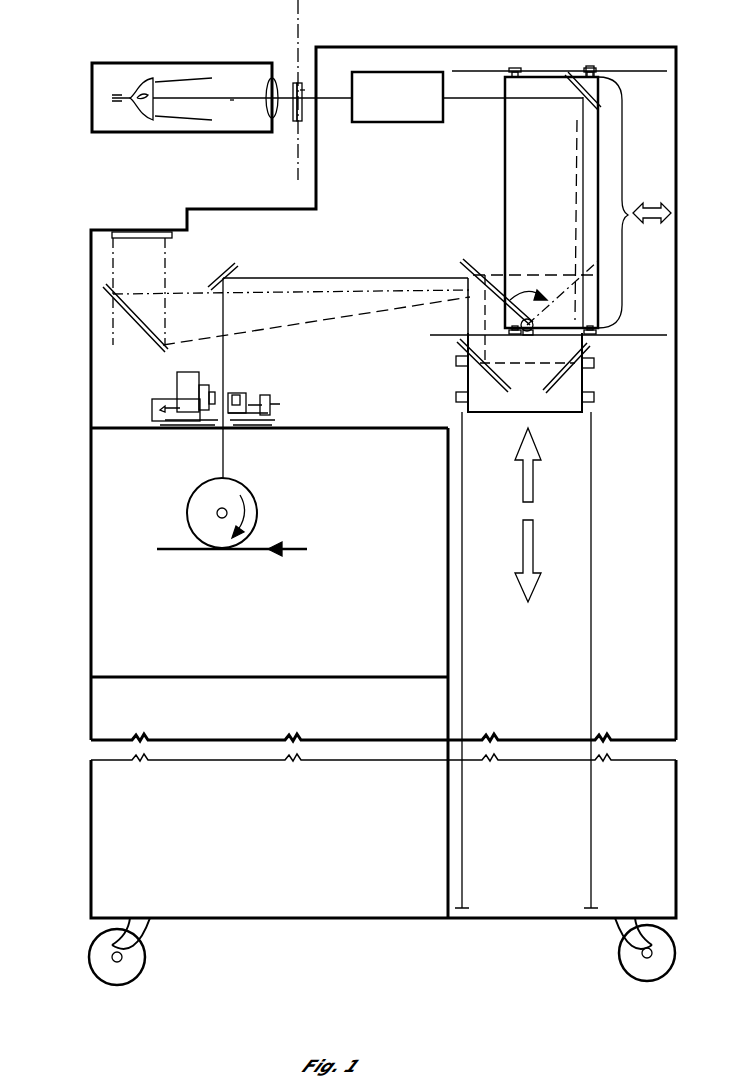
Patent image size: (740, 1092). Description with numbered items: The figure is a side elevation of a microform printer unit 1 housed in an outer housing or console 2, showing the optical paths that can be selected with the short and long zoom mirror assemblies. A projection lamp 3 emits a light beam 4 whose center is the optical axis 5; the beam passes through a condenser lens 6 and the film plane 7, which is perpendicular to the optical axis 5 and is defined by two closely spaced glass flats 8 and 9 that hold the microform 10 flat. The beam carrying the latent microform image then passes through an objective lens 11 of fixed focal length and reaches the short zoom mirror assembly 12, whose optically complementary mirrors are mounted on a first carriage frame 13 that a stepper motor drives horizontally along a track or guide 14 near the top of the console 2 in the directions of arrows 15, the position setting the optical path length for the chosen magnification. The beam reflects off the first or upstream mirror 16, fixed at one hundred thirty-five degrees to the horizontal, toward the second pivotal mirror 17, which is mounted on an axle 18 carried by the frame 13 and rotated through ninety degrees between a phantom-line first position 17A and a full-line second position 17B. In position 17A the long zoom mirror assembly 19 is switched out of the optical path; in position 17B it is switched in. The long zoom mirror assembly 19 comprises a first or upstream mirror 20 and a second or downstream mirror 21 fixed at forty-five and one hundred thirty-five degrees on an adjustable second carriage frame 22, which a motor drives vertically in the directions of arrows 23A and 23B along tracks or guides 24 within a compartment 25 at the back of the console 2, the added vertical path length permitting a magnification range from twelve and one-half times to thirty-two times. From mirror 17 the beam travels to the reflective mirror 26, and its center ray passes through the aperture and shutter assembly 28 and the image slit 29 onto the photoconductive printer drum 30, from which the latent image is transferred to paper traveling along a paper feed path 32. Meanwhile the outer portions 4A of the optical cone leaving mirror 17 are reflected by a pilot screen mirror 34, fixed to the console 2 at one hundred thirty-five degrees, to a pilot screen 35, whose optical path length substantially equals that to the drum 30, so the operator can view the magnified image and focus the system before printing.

The microform printer unit 1 is at (78, 250).
The outer housing or console 2 is at (676, 543).
The projection lamp 3 is at (145, 78).
The light beam 4 is at (178, 110).
The outer portions of the optical cone 4A is at (330, 318).
The optical axis 5 is at (230, 100).
The condenser lens 6 is at (275, 78).
The film plane 7 is at (300, 18).
The glass flat 8 is at (291, 118).
The glass flat 9 is at (303, 116).
The microform 10 is at (305, 90).
The objective lens 11 is at (406, 122).
The short zoom mirror assembly 12 is at (630, 143).
The first carriage frame 13 is at (590, 128).
The track or guide 14 is at (483, 72).
The arrows 15 is at (652, 203).
The first or upstream mirror 16 is at (588, 68).
The second pivotal mirror 17 is at (474, 252).
The first position of the second pivotal mirror 17A is at (560, 293).
The second position of the second pivotal mirror 17B is at (483, 293).
The axle 18 is at (533, 337).
The long zoom mirror assembly 19 is at (585, 378).
The first or upstream mirror 20 is at (552, 394).
The second or downstream mirror 21 is at (496, 388).
The second carriage frame 22 is at (572, 402).
The arrow 23A is at (533, 548).
The arrow 23B is at (533, 483).
The tracks or guides 24 is at (462, 625).
The compartment 25 is at (652, 671).
The reflective mirror 26 is at (224, 262).
The aperture and shutter assembly 28 is at (262, 378).
The image slit 29 is at (226, 432).
The photoconductive printer drum 30 is at (258, 502).
The paper feed path 32 is at (290, 552).
The pilot screen mirror 34 is at (145, 330).
The pilot screen 35 is at (128, 232).